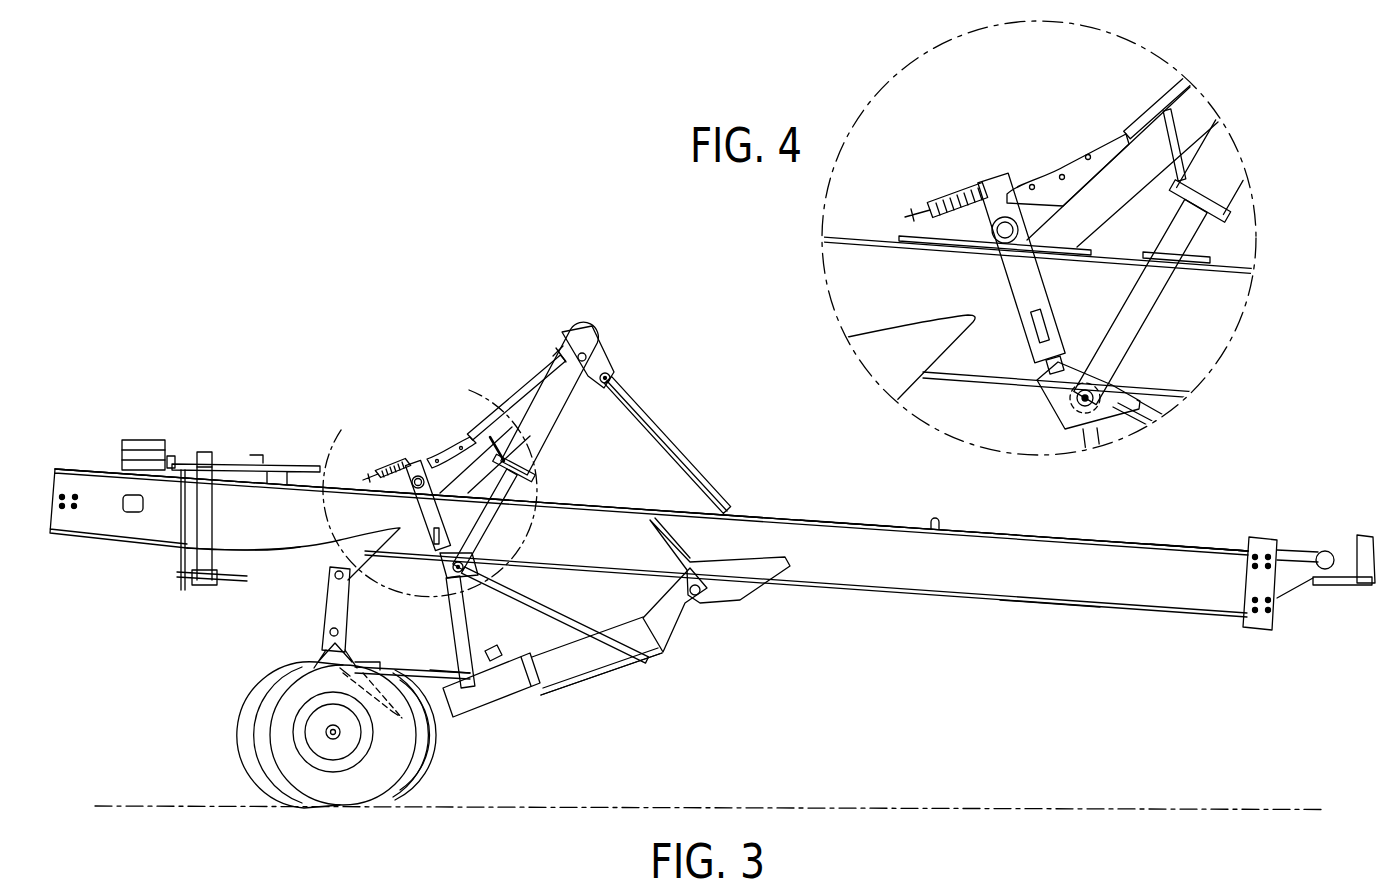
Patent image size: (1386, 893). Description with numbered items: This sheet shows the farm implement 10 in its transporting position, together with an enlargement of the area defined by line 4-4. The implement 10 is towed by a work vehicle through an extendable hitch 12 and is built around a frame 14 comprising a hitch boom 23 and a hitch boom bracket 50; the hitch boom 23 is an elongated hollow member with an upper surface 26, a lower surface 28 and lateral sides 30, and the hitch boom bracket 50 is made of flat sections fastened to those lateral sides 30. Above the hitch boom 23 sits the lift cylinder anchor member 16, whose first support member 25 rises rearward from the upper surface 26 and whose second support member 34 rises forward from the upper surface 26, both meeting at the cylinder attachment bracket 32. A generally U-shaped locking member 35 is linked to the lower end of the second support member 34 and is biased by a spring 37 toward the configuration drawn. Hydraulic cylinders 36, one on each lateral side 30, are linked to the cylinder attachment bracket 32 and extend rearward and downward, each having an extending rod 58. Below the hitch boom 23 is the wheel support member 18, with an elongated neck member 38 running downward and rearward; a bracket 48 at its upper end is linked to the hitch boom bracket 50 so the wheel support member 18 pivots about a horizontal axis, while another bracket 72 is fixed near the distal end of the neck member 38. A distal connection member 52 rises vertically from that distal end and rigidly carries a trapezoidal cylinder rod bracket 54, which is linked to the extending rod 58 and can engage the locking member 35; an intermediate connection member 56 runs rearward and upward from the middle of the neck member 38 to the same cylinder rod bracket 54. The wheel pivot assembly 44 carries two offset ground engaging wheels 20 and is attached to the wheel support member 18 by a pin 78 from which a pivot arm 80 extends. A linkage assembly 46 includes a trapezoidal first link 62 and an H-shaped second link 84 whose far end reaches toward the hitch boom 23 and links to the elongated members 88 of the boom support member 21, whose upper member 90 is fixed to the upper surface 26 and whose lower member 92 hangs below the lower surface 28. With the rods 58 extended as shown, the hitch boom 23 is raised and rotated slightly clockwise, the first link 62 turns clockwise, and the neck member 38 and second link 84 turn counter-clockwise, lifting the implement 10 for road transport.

In FIG. 3, the line 4- 4 is at (430, 471).
In FIG. 3, the farm implement 10 is at (466, 293).
In FIG. 3, the extendable hitch 12 is at (1297, 548).
In FIG. 3, the frame 14 is at (1073, 531).
In FIG. 3, the lift cylinder anchor member 16 is at (652, 391).
In FIG. 3, the wheel support member 18 is at (610, 678).
In FIG. 3, the ground engaging wheels 20 is at (253, 767).
In FIG. 3, the boom support member 21 is at (233, 458).
In FIG. 3, the hitch boom 23 is at (842, 529).
In FIG. 3, the first support member 25 is at (693, 458).
In FIG. 3, the upper surface 26 is at (1190, 550).
In FIG. 3, the lower surface 28 is at (1067, 608).
In FIG. 3, the lateral sides 30 is at (1046, 593).
In FIG. 3, the cylinder attachment bracket 32 is at (595, 346).
In FIG. 3, the second support member 34 is at (518, 438).
In FIG. 4, the second support member 34 is at (1130, 162).
In FIG. 3, the locking member 35 is at (416, 460).
In FIG. 4, the locking member 35 is at (993, 178).
In FIG. 3, the hydraulic cylinders 36 is at (562, 418).
In FIG. 4, the hydraulic cylinders 36 is at (1232, 168).
In FIG. 3, the spring 37 is at (386, 468).
In FIG. 4, the spring 37 is at (940, 196).
In FIG. 3, the elongated neck member 38 is at (652, 662).
In FIG. 3, the wheel pivot assembly 44 is at (400, 662).
In FIG. 3, the linkage assembly 46 is at (312, 648).
In FIG. 3, the bracket 48 is at (688, 628).
In FIG. 3, the hitch boom bracket 50 is at (750, 600).
In FIG. 3, the distal connection member 52 is at (490, 625).
In FIG. 4, the distal connection member 52 is at (1083, 434).
In FIG. 3, the cylinder rod bracket 54 is at (459, 565).
In FIG. 4, the cylinder rod bracket 54 is at (1035, 393).
In FIG. 3, the intermediate connection member 56 is at (543, 603).
In FIG. 4, the intermediate connection member 56 is at (1100, 391).
In FIG. 3, the extending rod 58 is at (485, 519).
In FIG. 4, the extending rod 58 is at (1128, 322).
In FIG. 3, the first link 62 is at (335, 674).
In FIG. 3, the bracket 72 is at (518, 698).
In FIG. 3, the pin 78 is at (440, 673).
In FIG. 3, the pivot arm 80 is at (387, 673).
In FIG. 3, the second link 84 is at (325, 603).
In FIG. 3, the elongated members 88 is at (268, 578).
In FIG. 3, the upper member 90 is at (286, 464).
In FIG. 3, the lower member 92 is at (180, 556).